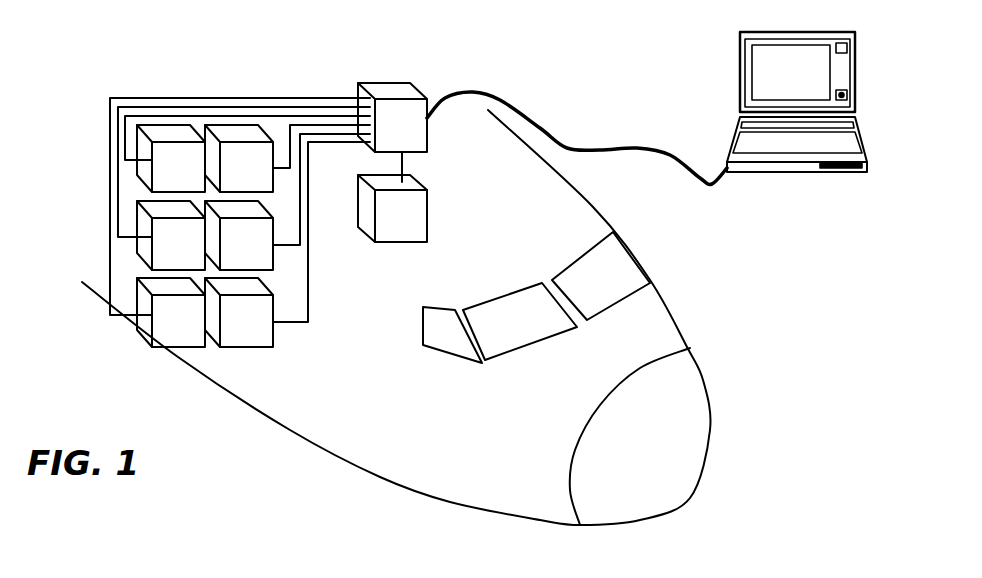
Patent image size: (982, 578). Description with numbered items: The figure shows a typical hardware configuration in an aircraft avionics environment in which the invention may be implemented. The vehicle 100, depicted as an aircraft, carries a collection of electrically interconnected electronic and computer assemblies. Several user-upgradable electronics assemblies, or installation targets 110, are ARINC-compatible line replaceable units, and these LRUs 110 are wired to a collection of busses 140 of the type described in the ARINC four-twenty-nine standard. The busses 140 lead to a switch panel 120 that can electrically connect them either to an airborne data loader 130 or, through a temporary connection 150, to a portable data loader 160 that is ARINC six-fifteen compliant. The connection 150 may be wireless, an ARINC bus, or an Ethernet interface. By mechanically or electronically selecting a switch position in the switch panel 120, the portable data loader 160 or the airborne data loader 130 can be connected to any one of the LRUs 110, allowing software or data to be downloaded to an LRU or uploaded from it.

The vehicle 100 is at (445, 503).
The line replaceable units (installation targets) 110 is at (88, 93).
The switch panel 120 is at (384, 83).
The airborne data loader 130 is at (428, 212).
The busses 140 is at (330, 76).
The temporary connection 150 is at (593, 145).
The portable data loader 160 is at (797, 172).